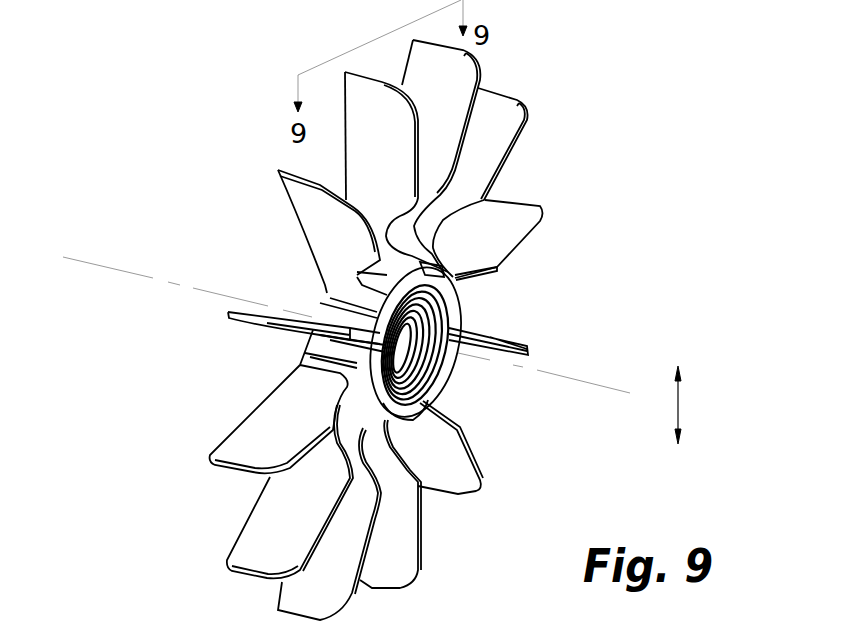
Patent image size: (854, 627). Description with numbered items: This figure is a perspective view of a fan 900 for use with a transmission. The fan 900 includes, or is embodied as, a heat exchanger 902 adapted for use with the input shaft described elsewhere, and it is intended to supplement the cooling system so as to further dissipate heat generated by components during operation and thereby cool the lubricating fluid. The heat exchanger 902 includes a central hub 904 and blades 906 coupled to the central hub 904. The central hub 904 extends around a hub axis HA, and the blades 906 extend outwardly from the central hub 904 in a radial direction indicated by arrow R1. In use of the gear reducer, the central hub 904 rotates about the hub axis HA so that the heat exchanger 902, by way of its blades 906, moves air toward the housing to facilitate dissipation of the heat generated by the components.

The fan 900 is at (630, 24).
The heat exchanger 902 is at (533, 61).
The central hub 904 is at (448, 287).
The blades 906 is at (445, 117).
The hub axis HA is at (588, 381).
The arrow indicating radial direction R1 is at (678, 403).